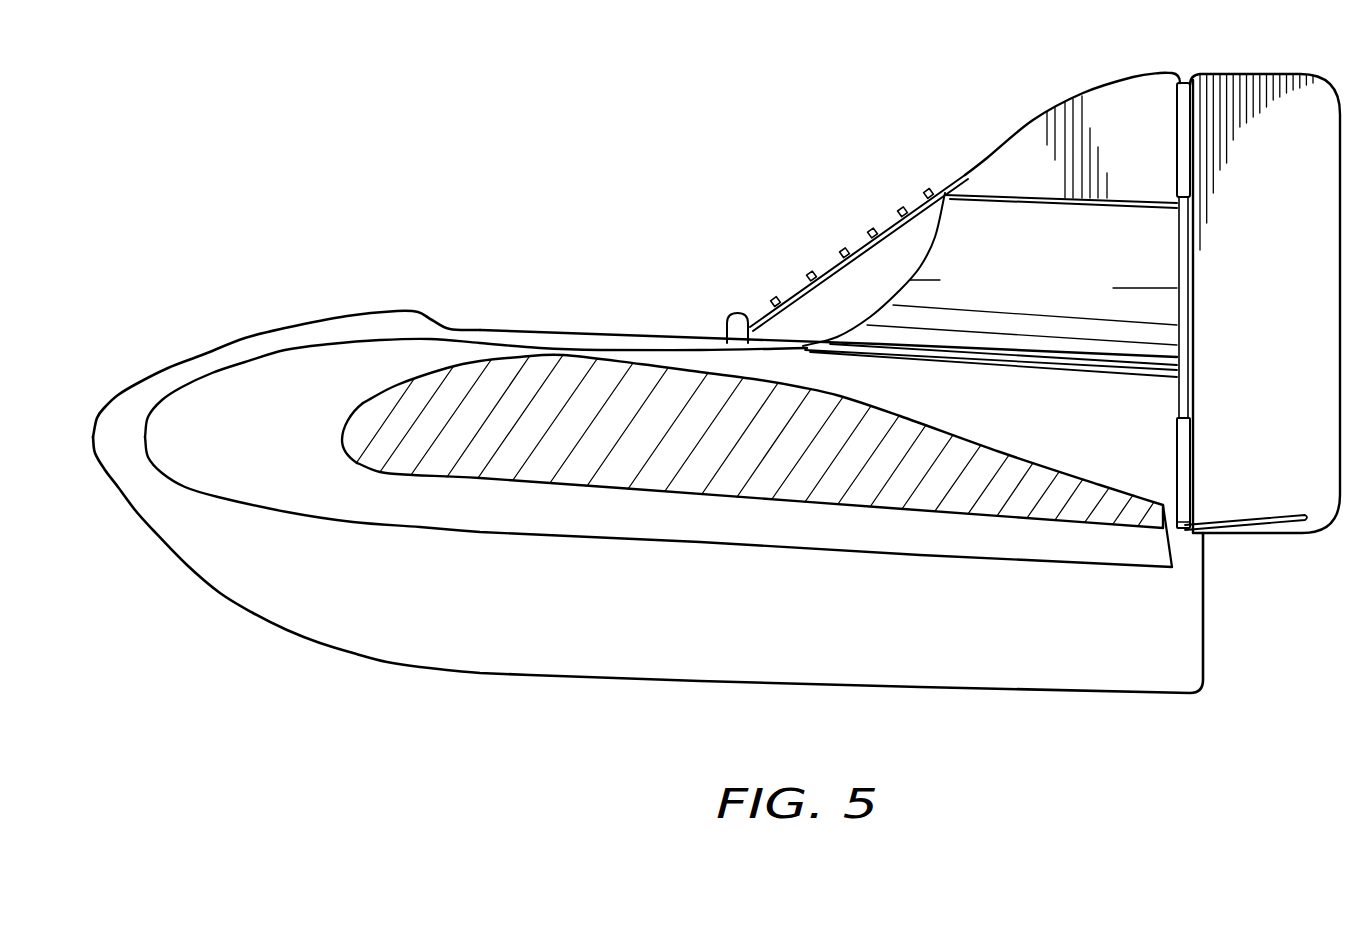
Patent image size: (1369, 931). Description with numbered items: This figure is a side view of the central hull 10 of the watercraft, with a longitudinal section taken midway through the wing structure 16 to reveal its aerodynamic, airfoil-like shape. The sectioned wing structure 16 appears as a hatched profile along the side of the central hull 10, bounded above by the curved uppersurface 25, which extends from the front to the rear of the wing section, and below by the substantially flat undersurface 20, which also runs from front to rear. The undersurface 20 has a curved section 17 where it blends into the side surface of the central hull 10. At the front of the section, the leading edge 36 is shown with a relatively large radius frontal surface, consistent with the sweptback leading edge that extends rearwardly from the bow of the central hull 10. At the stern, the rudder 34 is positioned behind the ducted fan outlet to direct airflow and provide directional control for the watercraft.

The central hull 10 is at (304, 601).
The wing structure 16 is at (616, 435).
The curved section 17 is at (376, 518).
The undersurface 20 is at (600, 490).
The curved uppersurface 25 is at (541, 354).
The rudder 34 is at (1269, 330).
The leading edge 36 is at (343, 430).